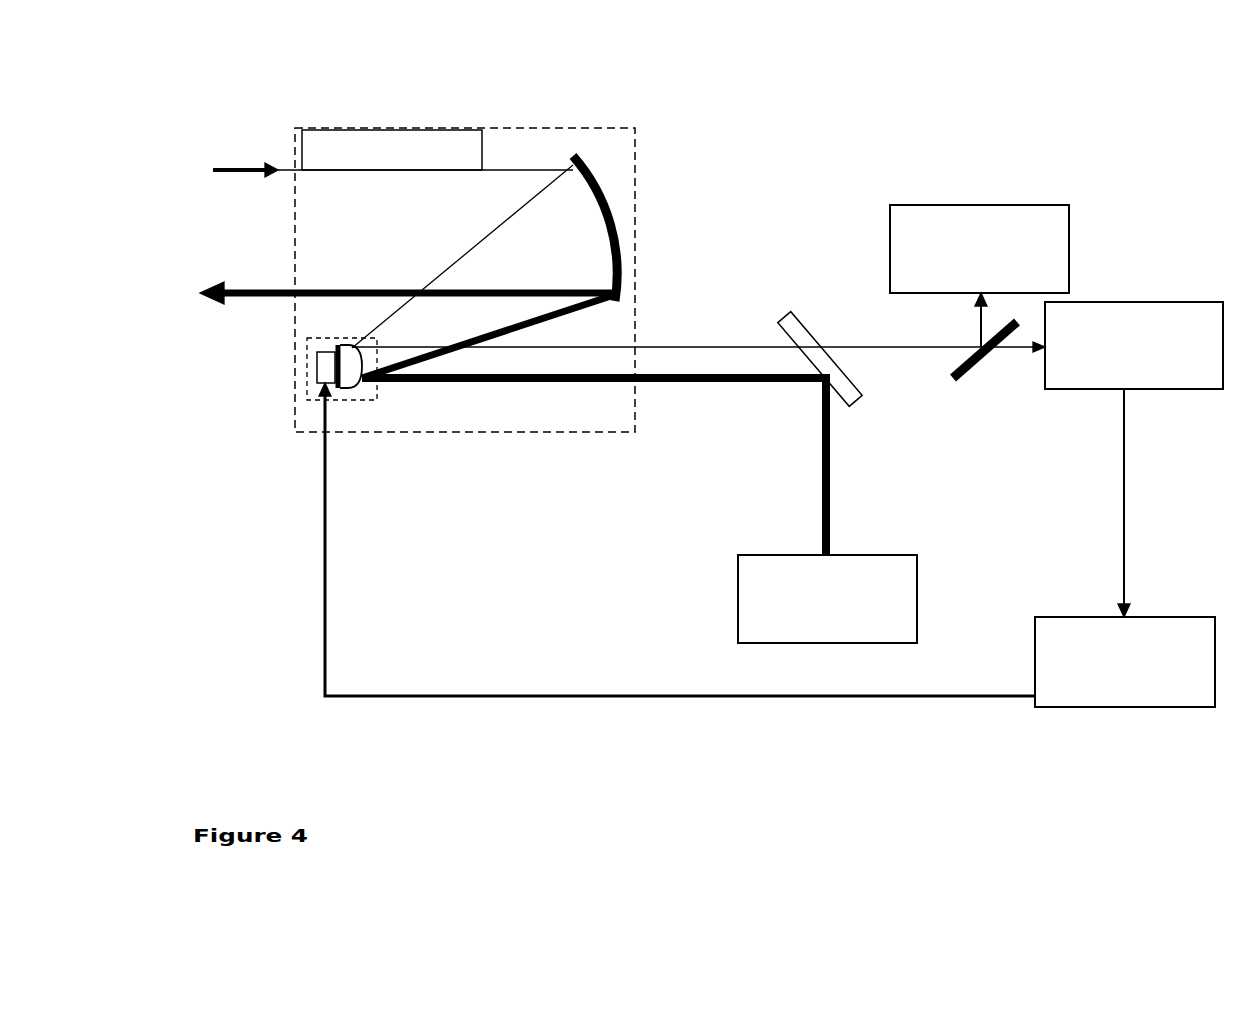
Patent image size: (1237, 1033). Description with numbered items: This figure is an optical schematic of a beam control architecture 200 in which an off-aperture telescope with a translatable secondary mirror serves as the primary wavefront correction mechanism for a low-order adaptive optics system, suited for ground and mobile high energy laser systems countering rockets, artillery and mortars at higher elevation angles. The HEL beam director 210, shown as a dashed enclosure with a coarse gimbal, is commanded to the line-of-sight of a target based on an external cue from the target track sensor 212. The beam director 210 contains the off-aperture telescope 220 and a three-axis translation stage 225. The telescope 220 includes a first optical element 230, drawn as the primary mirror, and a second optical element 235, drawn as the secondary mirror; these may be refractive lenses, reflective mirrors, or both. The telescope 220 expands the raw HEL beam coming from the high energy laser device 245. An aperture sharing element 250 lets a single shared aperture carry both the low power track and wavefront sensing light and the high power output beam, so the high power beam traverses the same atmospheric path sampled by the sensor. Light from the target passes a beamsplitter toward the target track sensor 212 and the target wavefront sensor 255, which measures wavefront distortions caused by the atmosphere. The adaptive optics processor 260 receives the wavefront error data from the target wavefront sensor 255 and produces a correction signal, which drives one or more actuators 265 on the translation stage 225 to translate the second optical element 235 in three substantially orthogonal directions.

The beam control architecture 200 is at (1019, 146).
The HEL beam director 210 is at (458, 99).
The target track sensor 212 is at (979, 249).
The off-aperture telescope 220 is at (440, 470).
The 3-axis translation stage 225 is at (308, 360).
The first optical element 230 is at (620, 235).
The second optical element 235 is at (372, 397).
The high energy laser device 245 is at (827, 599).
The aperture sharing element 250 is at (806, 308).
The target wavefront sensor 255 is at (1134, 345).
The adaptive optics processor 260 is at (1125, 662).
The actuators 265 is at (317, 380).